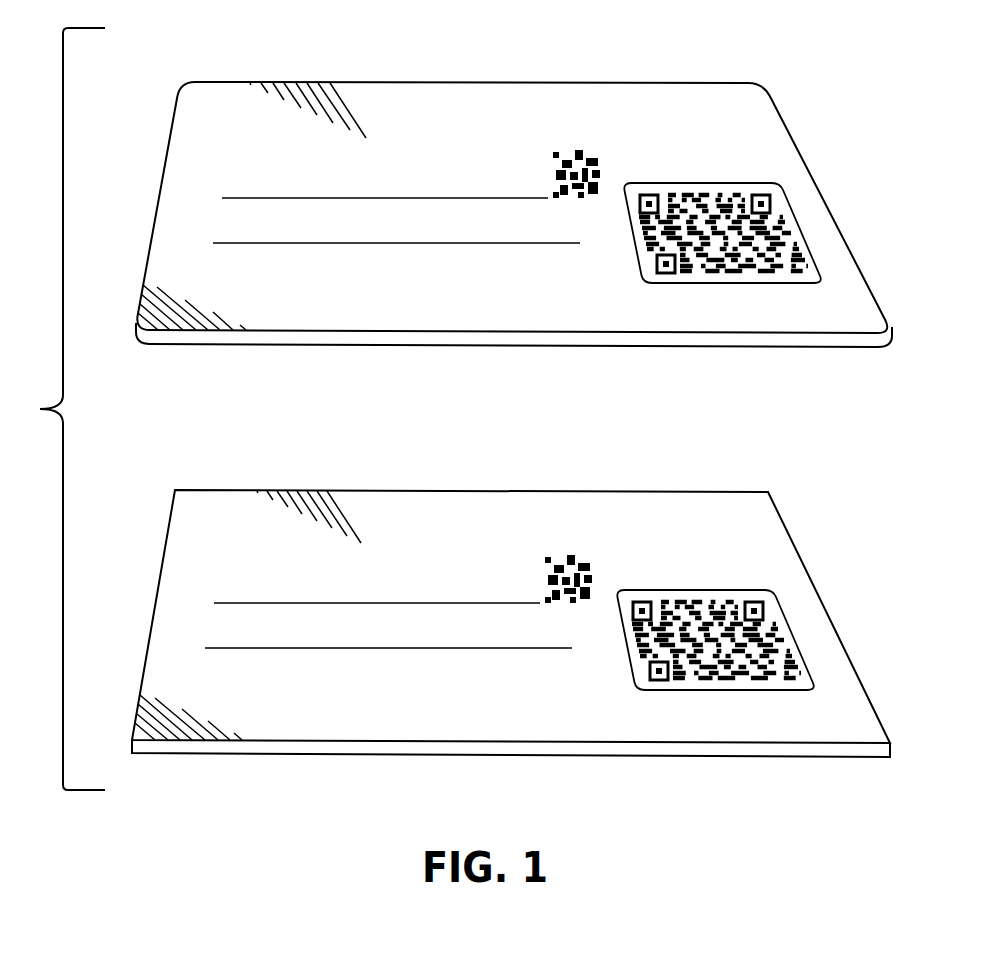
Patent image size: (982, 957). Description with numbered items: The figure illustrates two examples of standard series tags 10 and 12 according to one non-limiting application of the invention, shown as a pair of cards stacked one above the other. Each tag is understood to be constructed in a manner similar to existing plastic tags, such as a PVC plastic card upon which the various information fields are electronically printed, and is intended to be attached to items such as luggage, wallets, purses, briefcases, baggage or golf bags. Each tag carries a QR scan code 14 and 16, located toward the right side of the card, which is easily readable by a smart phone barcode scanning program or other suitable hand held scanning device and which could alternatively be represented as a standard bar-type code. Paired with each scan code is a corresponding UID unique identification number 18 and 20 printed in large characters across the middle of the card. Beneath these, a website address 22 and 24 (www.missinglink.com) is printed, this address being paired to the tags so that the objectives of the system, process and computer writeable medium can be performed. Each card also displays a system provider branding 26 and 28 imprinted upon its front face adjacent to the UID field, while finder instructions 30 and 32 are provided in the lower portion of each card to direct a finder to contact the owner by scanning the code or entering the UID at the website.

The standard series tag 10 is at (500, 200).
The standard series tag 12 is at (504, 615).
The QR scan code 14 is at (690, 190).
The QR scan code 16 is at (693, 592).
The UID number 18 is at (227, 220).
The UID number 20 is at (210, 622).
The website address 22 is at (550, 318).
The website address 24 is at (583, 723).
The system provider branding 26 is at (405, 156).
The system provider branding 28 is at (393, 560).
The finder instructions 30 is at (368, 318).
The finder instructions 32 is at (358, 720).